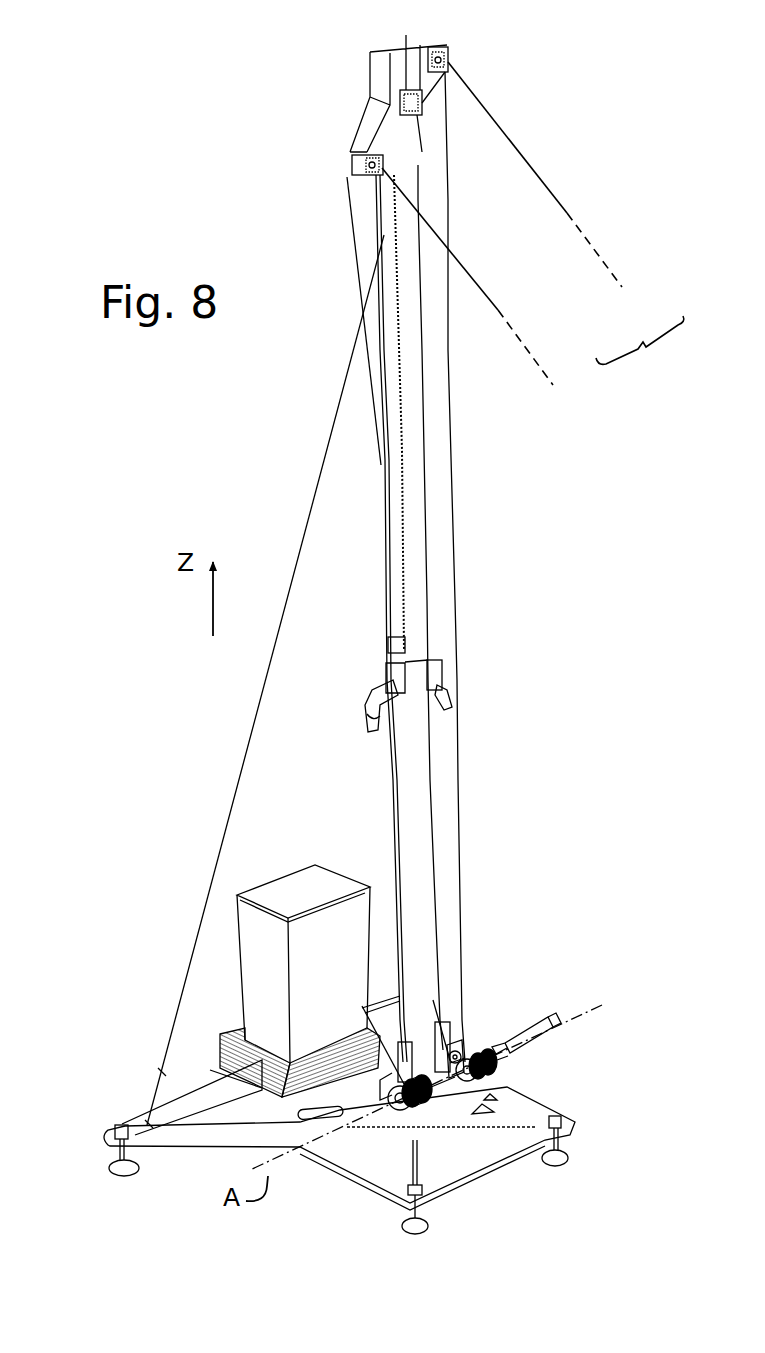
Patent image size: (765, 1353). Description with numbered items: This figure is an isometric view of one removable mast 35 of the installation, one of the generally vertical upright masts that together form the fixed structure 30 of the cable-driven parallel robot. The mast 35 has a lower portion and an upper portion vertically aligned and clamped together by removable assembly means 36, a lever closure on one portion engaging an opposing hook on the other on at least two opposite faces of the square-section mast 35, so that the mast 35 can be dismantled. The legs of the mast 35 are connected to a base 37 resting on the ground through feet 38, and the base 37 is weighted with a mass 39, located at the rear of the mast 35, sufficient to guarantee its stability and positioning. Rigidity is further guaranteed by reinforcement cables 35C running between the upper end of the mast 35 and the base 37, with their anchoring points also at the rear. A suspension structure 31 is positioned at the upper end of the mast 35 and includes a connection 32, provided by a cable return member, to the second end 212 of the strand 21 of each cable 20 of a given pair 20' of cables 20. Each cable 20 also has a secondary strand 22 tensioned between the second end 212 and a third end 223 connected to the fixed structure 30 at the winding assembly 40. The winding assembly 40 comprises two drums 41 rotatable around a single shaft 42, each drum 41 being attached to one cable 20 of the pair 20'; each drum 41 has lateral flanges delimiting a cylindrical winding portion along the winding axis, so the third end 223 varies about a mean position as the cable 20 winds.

The fixed structure 30 is at (265, 82).
The suspension structure 31 is at (394, 50).
The connection 32 is at (449, 53).
The second strand end 212 is at (450, 61).
The cable strand 21 is at (550, 181).
The cable 20 is at (461, 618).
The pair of cables 20' is at (640, 351).
The secondary cable strand 22 is at (386, 456).
The mast 35 is at (448, 520).
The reinforcement cable 35C is at (263, 693).
The assembly means 36 is at (453, 663).
The base 37 is at (548, 1100).
The foot 38 is at (117, 1160).
The mass 39 is at (258, 940).
The winding assembly 40 is at (560, 1012).
The drum 41 is at (428, 1094).
The shaft 42 is at (451, 1066).
The third end 223 is at (466, 1056).